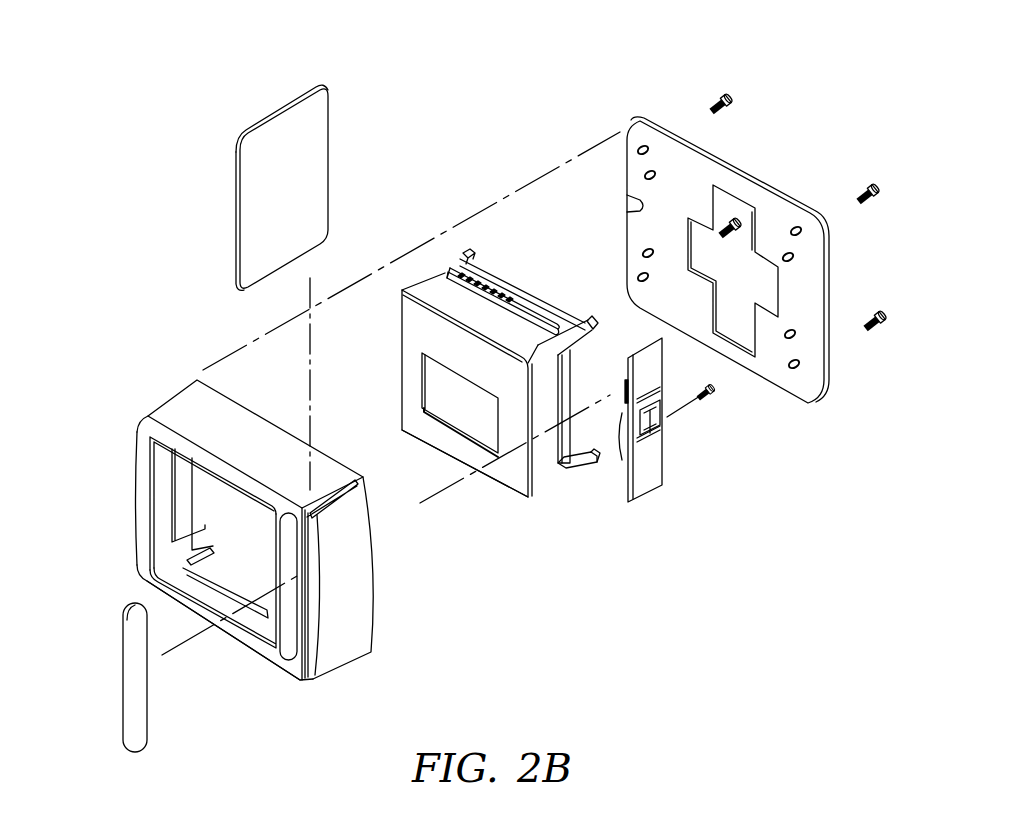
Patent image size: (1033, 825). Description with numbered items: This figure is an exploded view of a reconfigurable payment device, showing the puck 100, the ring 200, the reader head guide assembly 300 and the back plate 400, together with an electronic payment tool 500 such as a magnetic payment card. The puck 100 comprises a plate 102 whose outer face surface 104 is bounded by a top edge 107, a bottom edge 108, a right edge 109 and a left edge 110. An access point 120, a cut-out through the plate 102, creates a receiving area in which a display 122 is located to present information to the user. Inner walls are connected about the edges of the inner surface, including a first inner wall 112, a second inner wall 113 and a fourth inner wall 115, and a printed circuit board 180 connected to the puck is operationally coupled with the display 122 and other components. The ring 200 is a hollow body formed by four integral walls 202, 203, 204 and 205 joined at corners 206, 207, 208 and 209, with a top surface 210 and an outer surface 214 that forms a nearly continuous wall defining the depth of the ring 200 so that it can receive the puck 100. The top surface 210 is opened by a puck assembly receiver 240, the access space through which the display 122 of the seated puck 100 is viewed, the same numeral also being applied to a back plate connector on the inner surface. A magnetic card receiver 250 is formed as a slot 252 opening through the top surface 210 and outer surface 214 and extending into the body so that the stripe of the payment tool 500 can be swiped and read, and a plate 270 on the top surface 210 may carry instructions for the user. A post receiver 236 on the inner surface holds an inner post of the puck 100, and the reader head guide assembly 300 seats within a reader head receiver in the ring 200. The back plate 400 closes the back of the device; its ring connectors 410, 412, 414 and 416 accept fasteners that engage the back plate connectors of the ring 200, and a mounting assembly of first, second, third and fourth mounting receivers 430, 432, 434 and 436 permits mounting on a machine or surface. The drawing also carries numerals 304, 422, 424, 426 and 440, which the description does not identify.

The puck 100 is at (497, 364).
The plate 102 is at (480, 493).
The outer surface 104 is at (420, 432).
The top edge 107 is at (440, 307).
The bottom edge 108 is at (486, 480).
The right edge 109 is at (540, 462).
The left edge 110 is at (400, 370).
The first inner wall 112 is at (477, 317).
The second inner wall 113 is at (573, 470).
The fourth inner wall 115 is at (430, 283).
The access point 120 is at (475, 437).
The display 122 is at (477, 433).
The printed circuit board 180 is at (537, 313).
The ring 200 is at (248, 524).
The integral wall 202 is at (195, 412).
The integral wall 203 is at (353, 593).
The integral wall 204 is at (247, 653).
The integral wall 205 is at (140, 490).
The corner 206 is at (363, 481).
The corner 207 is at (308, 678).
The corner 208 is at (148, 572).
The corner 209 is at (150, 417).
The top surface 210 is at (143, 428).
The outer surface 214 is at (227, 440).
The post receiver 236 is at (185, 560).
The puck assembly receiver 240 is at (228, 638).
The magnetic card receiver 250 is at (304, 682).
The slot 252 is at (297, 628).
The plate 270 is at (126, 693).
The reader head guide assembly 300 is at (696, 441).
The screw 304 is at (712, 400).
The back plate 400 is at (712, 261).
The ring connector 410 is at (650, 172).
The ring connector 412 is at (641, 275).
The ring connector 414 is at (795, 367).
The ring connector 416 is at (797, 228).
The cross-shaped cutout 422 is at (730, 238).
The screw 424 is at (876, 332).
The screws 426 is at (730, 97).
The first mounting receiver 430 is at (645, 148).
The second mounting receiver 432 is at (788, 255).
The third mounting receiver 434 is at (797, 340).
The fourth mounting receiver 436 is at (645, 251).
The screw 440 is at (683, 132).
The electronic payment tool 500 is at (318, 137).